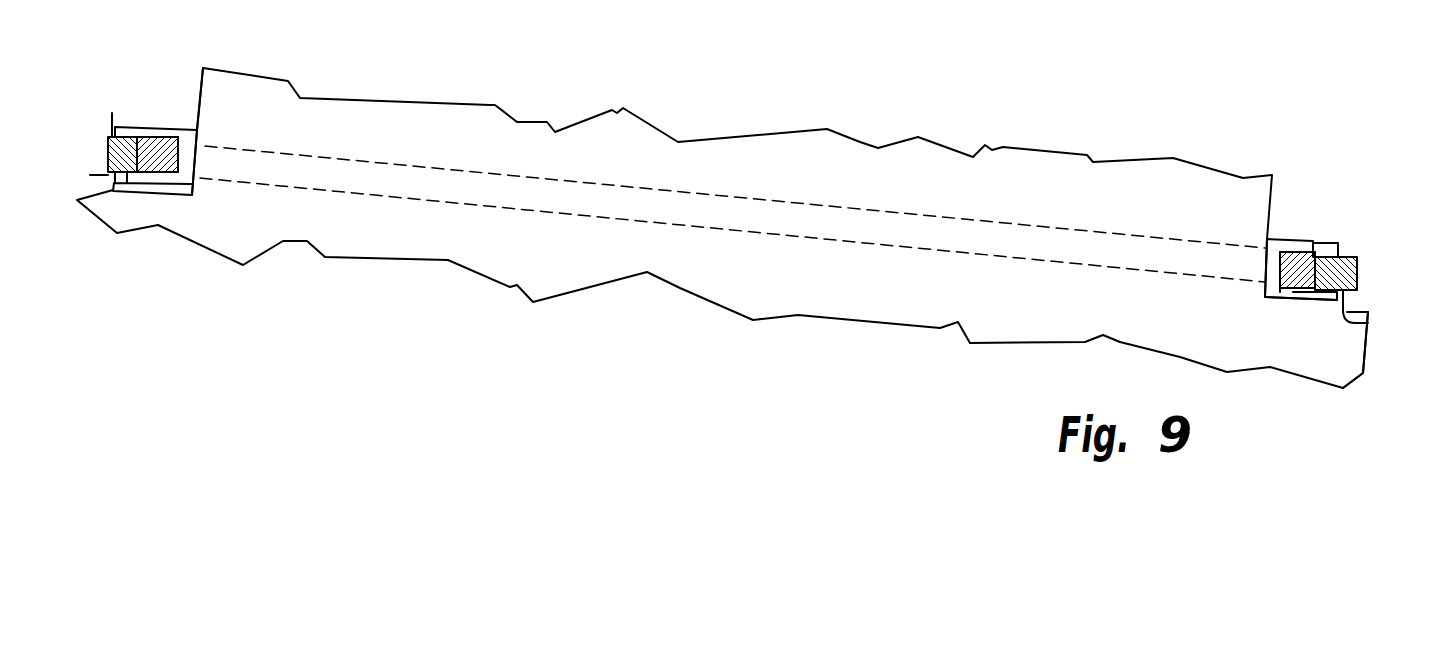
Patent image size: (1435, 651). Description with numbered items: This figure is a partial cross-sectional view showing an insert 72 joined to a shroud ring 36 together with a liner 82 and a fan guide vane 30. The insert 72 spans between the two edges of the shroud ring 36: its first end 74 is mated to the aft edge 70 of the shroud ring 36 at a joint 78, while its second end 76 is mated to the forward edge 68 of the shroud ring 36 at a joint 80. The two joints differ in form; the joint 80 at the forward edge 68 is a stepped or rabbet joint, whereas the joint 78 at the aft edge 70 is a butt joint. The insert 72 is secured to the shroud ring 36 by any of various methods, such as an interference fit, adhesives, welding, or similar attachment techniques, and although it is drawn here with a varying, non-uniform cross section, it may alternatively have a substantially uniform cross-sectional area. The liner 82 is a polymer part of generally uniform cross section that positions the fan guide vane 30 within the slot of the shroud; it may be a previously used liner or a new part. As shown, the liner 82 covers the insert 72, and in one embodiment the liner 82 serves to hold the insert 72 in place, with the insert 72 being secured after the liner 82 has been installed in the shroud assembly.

The fan guide vane 30 is at (1132, 187).
The shroud ring 36 is at (125, 127).
The forward edge 68 is at (123, 172).
The aft edge 70 is at (1368, 323).
The insert 72 is at (1278, 243).
The first end 74 is at (1290, 290).
The second end 76 is at (195, 146).
The joint 78 is at (1313, 242).
The joint 80 is at (149, 165).
The liner 82 is at (195, 128).